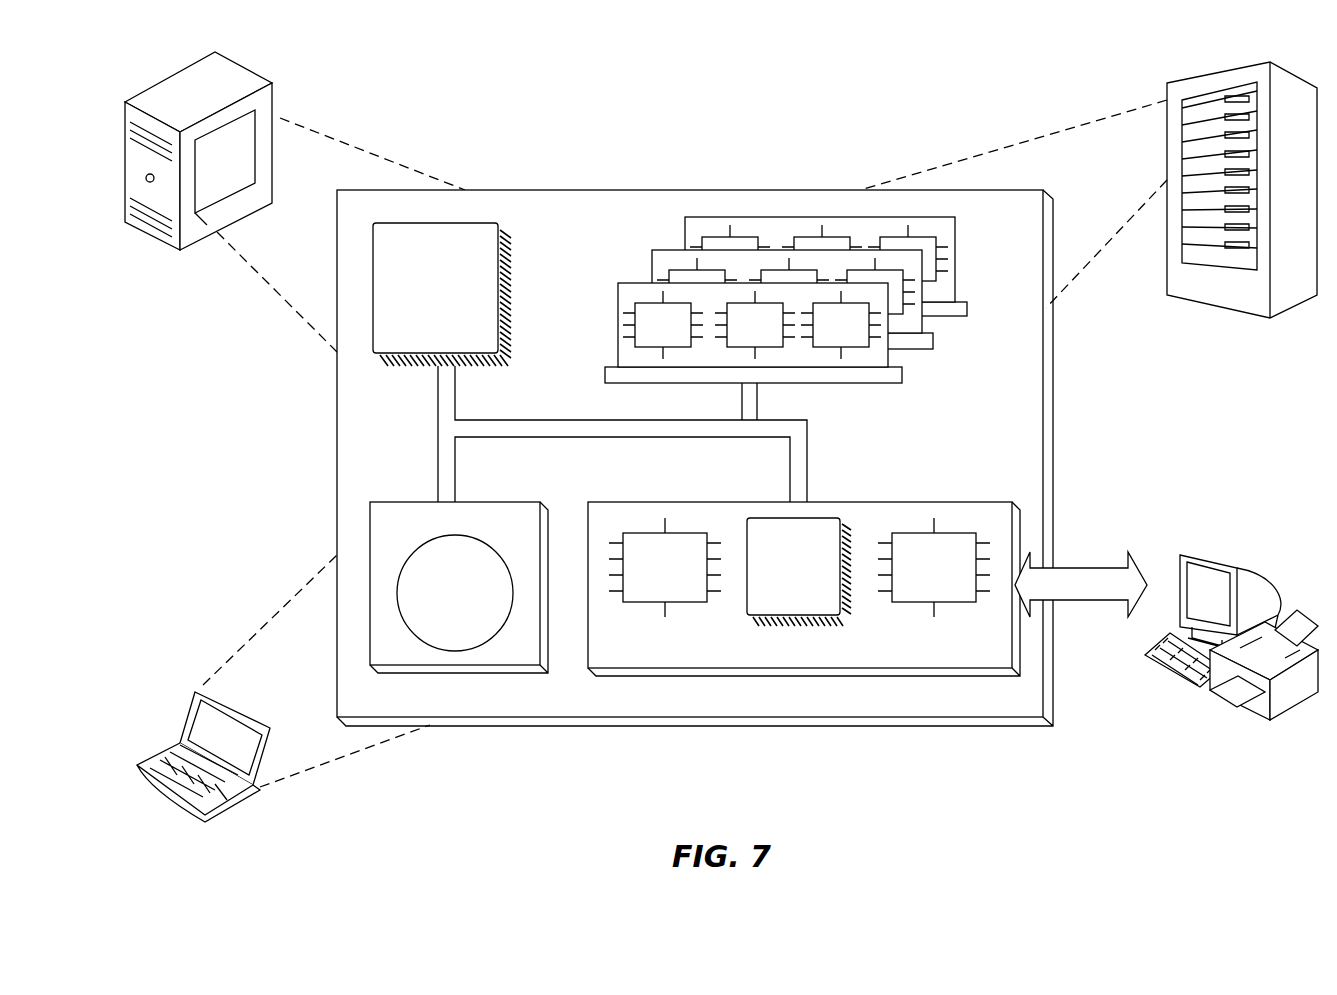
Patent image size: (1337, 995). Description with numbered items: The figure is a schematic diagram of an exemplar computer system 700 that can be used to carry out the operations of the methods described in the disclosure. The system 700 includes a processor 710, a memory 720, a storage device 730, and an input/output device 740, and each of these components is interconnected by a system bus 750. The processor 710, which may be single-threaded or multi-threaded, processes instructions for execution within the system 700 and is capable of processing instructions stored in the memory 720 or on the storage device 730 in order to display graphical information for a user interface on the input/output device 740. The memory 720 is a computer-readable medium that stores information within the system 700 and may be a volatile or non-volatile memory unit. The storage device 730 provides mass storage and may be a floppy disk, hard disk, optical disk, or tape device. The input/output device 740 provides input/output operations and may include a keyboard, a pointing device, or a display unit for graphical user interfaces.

The computer system 700 is at (548, 103).
The processor 710 is at (442, 294).
The memory 720 is at (959, 350).
The storage device 730 is at (459, 587).
The input/output device 740 is at (1176, 560).
The system bus 750 is at (622, 437).